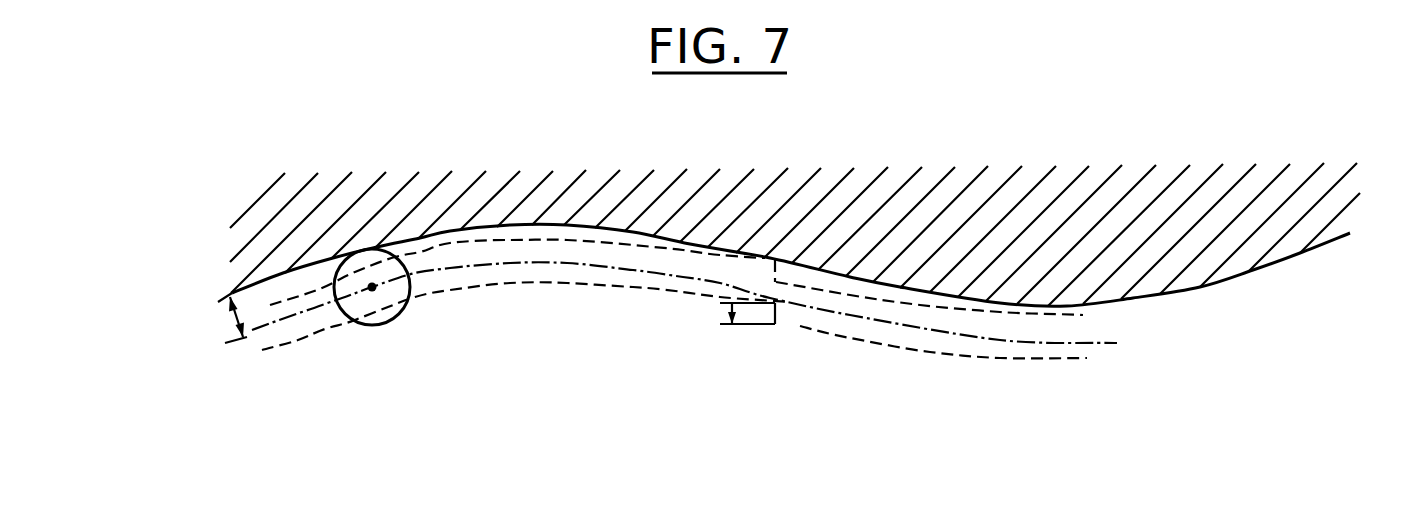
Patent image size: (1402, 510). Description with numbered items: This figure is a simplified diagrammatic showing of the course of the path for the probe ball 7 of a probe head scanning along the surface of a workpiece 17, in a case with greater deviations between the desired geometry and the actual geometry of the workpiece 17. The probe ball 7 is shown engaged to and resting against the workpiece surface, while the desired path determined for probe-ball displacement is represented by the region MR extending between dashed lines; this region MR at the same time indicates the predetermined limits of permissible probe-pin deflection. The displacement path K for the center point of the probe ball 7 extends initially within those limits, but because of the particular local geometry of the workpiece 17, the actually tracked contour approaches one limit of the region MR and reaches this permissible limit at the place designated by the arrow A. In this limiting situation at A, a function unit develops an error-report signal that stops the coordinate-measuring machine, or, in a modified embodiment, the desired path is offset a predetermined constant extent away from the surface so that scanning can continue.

The workpiece 17 is at (457, 185).
The probe ball 7 is at (378, 325).
The displacement path K is at (547, 263).
The region of maximum permissible probe deflection MR is at (295, 327).
The limiting place A is at (795, 350).